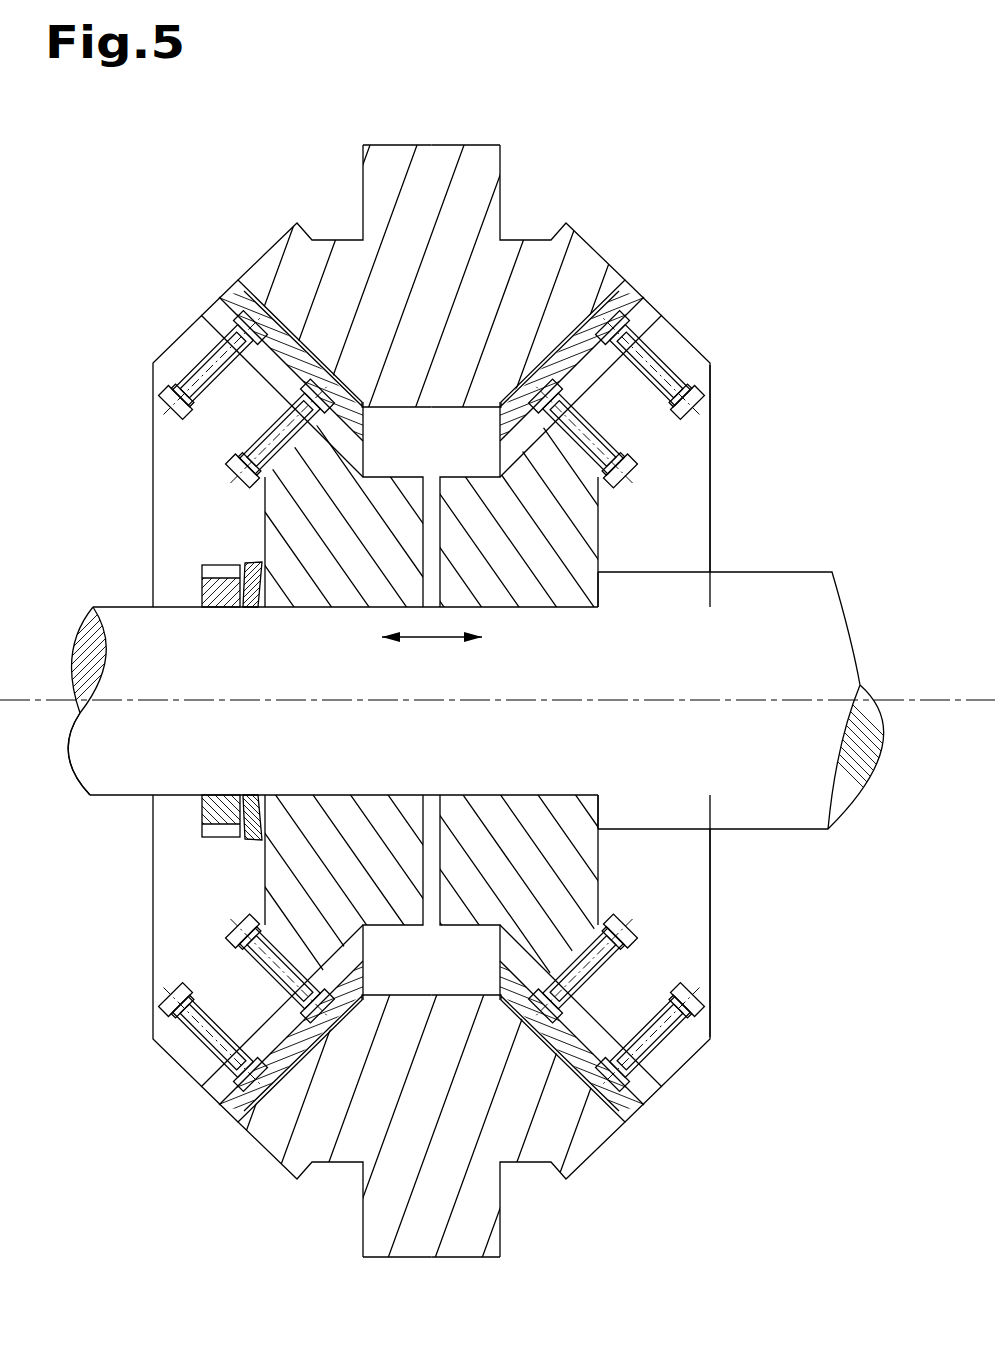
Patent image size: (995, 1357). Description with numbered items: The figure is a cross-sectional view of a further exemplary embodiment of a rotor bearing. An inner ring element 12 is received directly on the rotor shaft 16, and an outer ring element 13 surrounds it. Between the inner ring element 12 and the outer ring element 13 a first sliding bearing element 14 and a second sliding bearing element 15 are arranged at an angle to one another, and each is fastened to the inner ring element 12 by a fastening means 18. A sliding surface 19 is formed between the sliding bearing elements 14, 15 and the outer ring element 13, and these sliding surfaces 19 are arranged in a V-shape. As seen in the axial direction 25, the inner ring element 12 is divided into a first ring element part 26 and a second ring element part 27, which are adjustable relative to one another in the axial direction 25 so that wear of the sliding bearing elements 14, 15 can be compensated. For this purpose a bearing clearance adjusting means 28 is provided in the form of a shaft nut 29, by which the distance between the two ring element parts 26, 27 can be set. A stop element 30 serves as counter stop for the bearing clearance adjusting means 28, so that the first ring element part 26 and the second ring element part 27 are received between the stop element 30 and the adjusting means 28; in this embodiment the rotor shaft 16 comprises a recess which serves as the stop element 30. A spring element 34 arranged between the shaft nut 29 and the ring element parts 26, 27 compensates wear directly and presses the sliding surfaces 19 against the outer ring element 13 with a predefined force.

The inner ring element 12 is at (622, 613).
The outer ring element 13 is at (580, 260).
The first sliding bearing element 14 is at (247, 303).
The second sliding bearing element 15 is at (637, 380).
The rotor shaft 16 is at (795, 768).
The fastening means 18 is at (653, 365).
The sliding surface 19 is at (303, 347).
The axial direction 25 is at (432, 641).
The first ring element part 26 is at (333, 585).
The second ring element part 27 is at (590, 550).
The bearing clearance adjusting means 28 is at (233, 480).
The shaft nut 29 is at (195, 607).
The stop element 30 is at (617, 367).
The spring element 34 is at (248, 607).